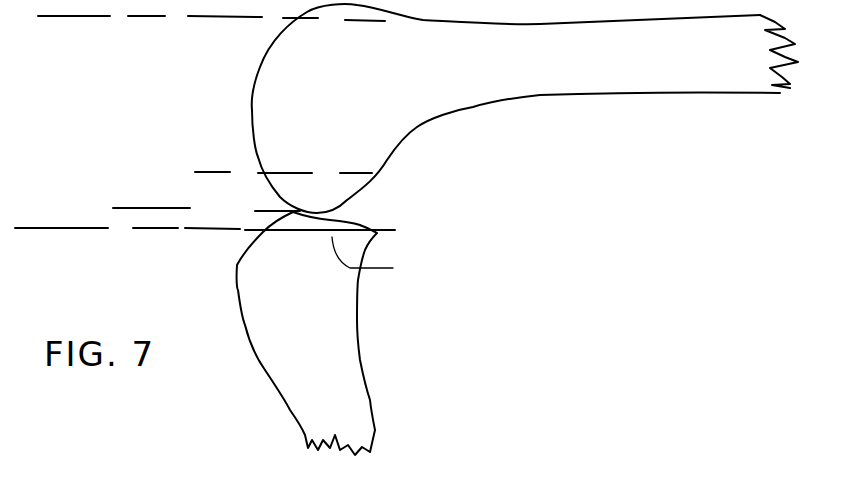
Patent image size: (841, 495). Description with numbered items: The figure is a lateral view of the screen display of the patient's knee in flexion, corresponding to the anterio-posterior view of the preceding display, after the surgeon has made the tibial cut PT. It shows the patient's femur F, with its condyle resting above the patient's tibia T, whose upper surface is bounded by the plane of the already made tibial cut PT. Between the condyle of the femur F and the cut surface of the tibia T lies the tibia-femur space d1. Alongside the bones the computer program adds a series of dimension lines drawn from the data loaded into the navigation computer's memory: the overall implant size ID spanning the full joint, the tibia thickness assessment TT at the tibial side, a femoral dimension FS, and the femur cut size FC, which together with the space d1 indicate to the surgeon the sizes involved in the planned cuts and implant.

The femur F is at (513, 90).
The tibia T is at (340, 347).
The tibial cut PT is at (378, 260).
The overall implant size ID is at (80, 16).
The femoral shaft dimension FS is at (155, 16).
The femur cut size FC is at (222, 16).
The tibia-femur space d1 is at (222, 172).
The tibia thickness assessment TT is at (155, 208).